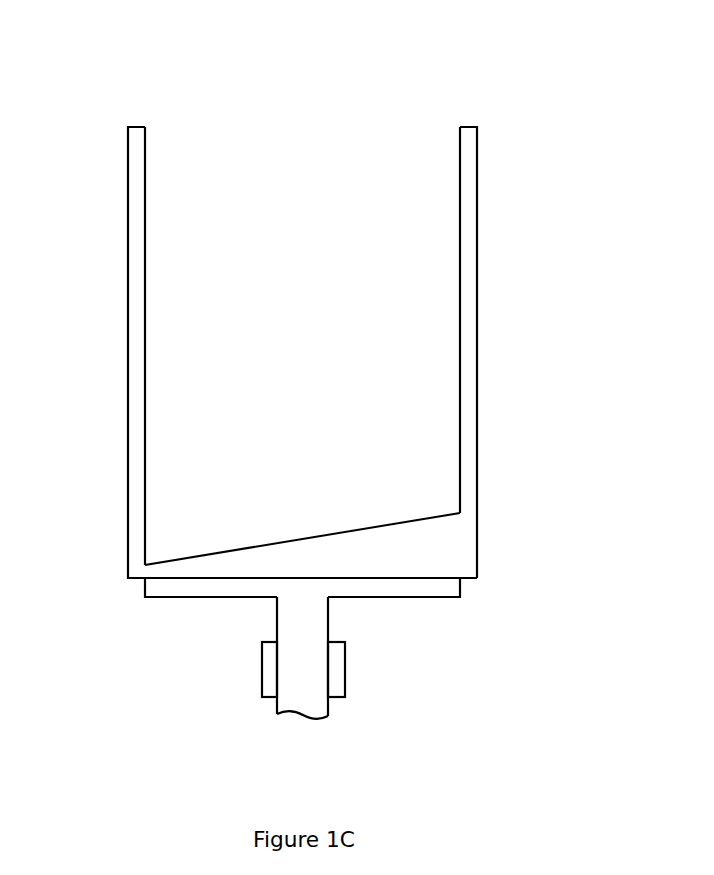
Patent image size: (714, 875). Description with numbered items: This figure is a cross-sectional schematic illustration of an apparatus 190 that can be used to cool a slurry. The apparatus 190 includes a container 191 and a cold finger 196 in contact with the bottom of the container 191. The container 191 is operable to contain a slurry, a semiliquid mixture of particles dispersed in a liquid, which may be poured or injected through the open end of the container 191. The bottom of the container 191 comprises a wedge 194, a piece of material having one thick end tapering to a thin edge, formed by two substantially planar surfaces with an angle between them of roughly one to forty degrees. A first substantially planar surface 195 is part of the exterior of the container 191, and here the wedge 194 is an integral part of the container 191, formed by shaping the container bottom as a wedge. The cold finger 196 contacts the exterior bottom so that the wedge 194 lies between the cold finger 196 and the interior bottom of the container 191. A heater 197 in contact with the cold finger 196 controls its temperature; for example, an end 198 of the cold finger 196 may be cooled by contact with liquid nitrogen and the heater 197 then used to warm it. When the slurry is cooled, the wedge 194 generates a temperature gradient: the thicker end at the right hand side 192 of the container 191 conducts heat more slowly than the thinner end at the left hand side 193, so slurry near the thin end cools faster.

The apparatus 190 is at (565, 66).
The container 191 is at (470, 188).
The right hand side of the container 192 is at (462, 330).
The left hand side of the container 193 is at (143, 352).
The wedge 194 is at (200, 555).
The first substantially planar surface 195 is at (200, 578).
The cold finger 196 is at (328, 620).
The heater 197 is at (262, 676).
The end of the cold finger 198 is at (302, 716).